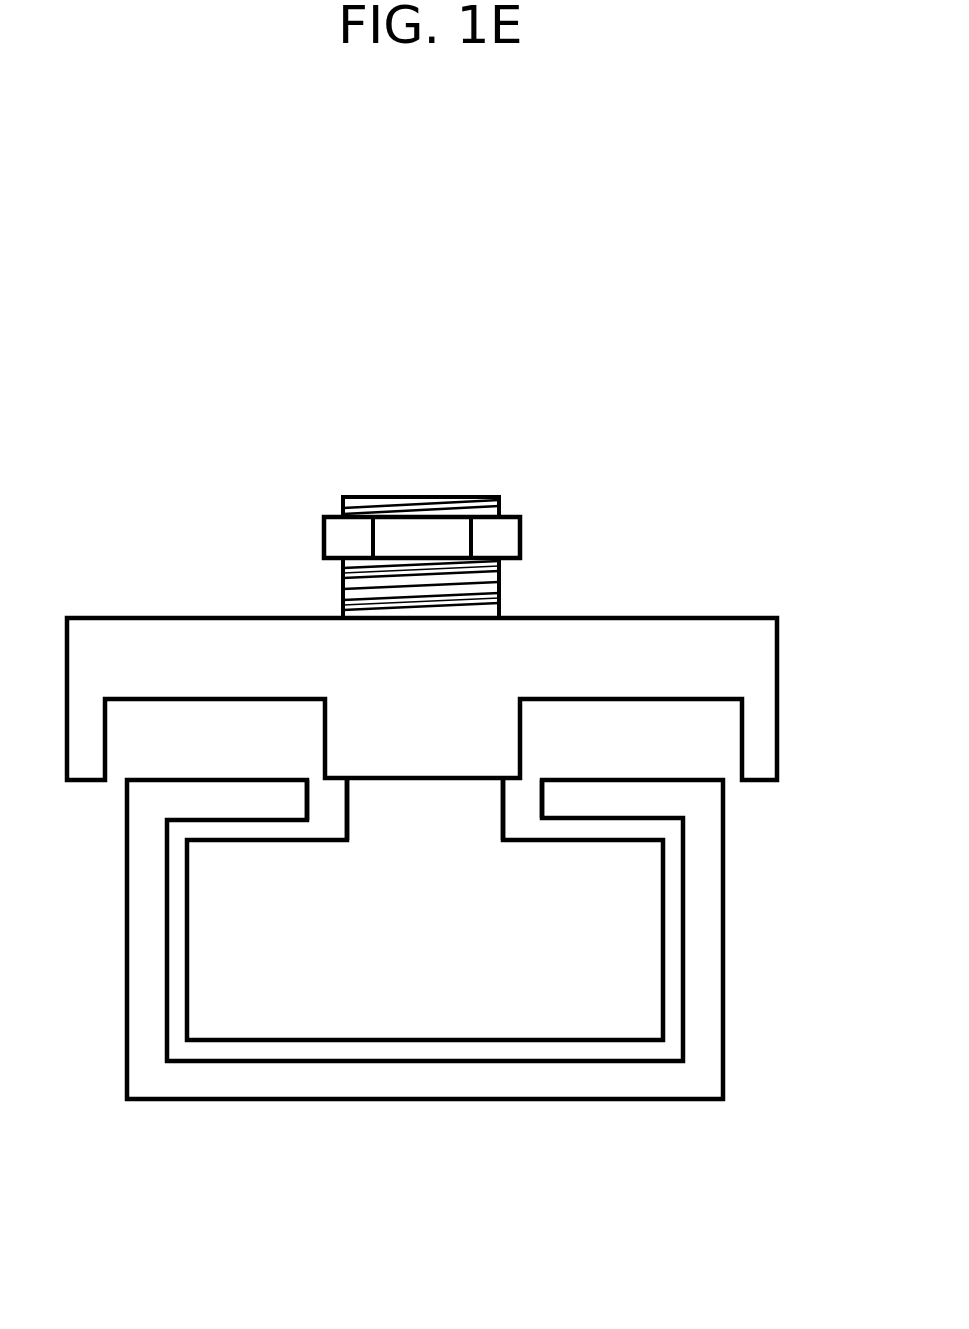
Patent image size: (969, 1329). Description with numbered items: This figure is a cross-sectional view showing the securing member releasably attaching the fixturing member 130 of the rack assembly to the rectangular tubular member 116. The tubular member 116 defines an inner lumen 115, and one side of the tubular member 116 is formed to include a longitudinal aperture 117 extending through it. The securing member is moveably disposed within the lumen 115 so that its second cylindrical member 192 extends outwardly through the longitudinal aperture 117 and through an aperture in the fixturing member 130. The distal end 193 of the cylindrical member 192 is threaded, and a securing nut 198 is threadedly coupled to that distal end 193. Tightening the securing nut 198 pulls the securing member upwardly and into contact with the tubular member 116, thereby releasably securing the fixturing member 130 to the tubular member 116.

The fixturing member 130 is at (437, 705).
The rectangular tubular member 116 is at (463, 1150).
The inner lumen 115 is at (181, 945).
The securing nut 198 is at (503, 539).
The distal end 193 is at (487, 593).
The second cylindrical member 192 is at (365, 813).
The longitudinal aperture 117 is at (517, 808).